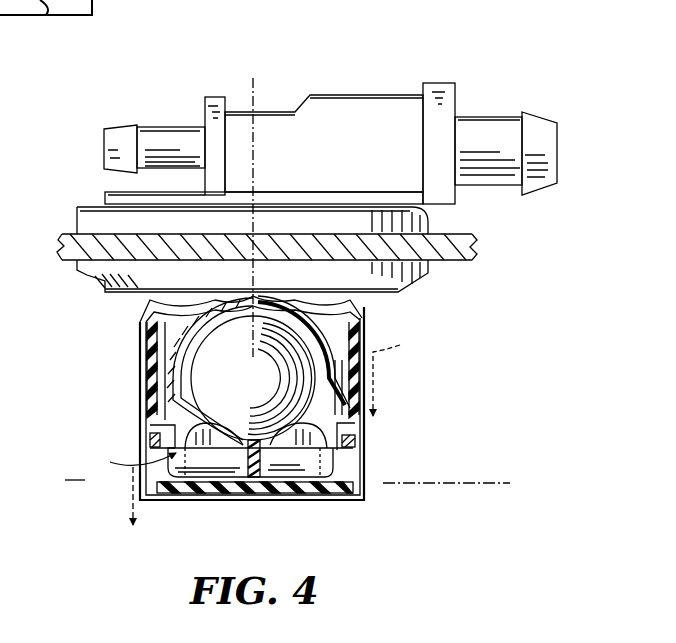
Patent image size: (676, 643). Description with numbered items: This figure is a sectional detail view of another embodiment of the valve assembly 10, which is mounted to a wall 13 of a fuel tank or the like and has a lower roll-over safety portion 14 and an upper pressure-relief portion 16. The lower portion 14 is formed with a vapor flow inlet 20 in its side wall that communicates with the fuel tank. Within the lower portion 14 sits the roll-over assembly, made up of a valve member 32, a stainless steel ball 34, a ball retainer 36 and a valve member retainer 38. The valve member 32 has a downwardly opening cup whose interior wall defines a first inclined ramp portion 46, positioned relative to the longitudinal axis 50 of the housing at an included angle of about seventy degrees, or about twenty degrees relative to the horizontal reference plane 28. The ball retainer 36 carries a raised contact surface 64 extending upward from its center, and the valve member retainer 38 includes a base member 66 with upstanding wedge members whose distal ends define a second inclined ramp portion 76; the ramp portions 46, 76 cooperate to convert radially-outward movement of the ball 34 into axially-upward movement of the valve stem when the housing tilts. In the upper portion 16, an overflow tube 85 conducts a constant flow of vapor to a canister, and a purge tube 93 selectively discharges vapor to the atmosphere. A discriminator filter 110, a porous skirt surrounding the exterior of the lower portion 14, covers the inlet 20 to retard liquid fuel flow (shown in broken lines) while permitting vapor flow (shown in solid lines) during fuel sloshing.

The valve assembly 10 is at (373, 86).
The wall 13 is at (452, 245).
The lower roll-over safety portion 14 is at (150, 362).
The upper pressure-relief portion 16 is at (237, 122).
The inlet 20 is at (328, 323).
The horizontal reference plane 28 is at (457, 482).
The valve member 32 is at (396, 285).
The ball 34 is at (248, 360).
The ball retainer 36 is at (220, 465).
The valve member retainer 38 is at (157, 385).
The first inclined ramp portion 46 is at (140, 330).
The longitudinal axis 50 is at (256, 84).
The raised contact surface 64 is at (255, 435).
The base member 66 is at (275, 490).
The second inclined ramp portion 76 is at (242, 438).
The overflow tube 85 is at (157, 140).
The purge tube 93 is at (482, 132).
The discriminator filter 110 is at (140, 417).